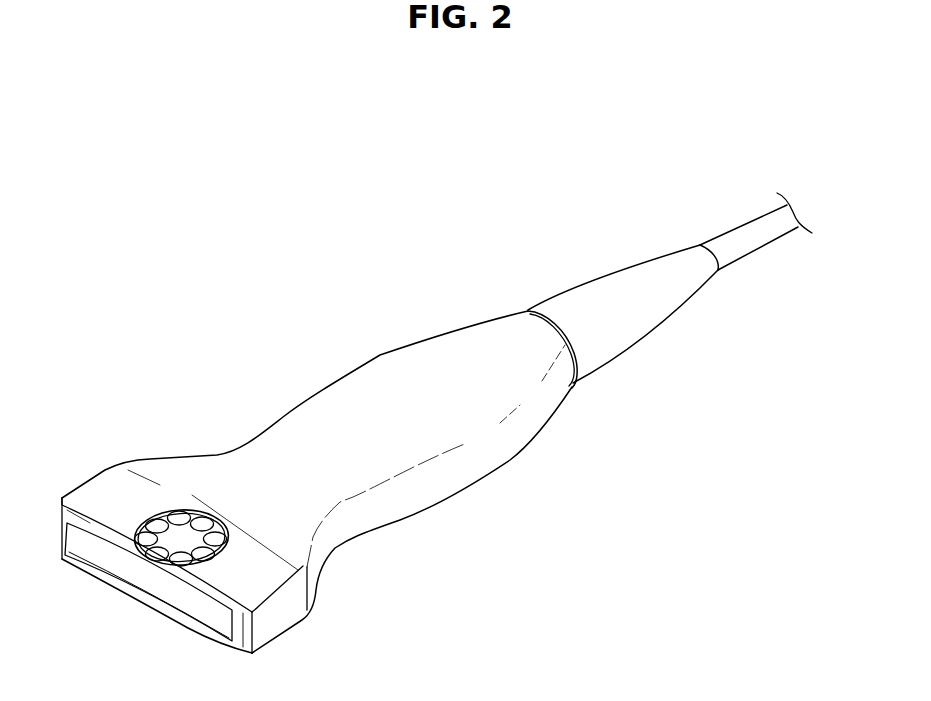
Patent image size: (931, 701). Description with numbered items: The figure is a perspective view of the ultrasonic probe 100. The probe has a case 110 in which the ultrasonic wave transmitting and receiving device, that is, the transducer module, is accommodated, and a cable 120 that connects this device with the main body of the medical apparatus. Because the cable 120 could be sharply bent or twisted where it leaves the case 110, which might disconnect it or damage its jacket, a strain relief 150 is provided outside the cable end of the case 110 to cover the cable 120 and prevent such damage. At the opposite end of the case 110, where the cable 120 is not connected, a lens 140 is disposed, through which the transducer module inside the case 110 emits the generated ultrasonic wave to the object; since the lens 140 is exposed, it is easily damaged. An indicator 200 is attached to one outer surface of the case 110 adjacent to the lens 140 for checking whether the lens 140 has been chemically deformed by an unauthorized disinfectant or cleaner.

The ultrasonic probe 100 is at (268, 290).
The case 110 is at (367, 393).
The cable 120 is at (743, 237).
The lens 140 is at (133, 583).
The strain relief 150 is at (597, 292).
The indicator 200 is at (169, 513).